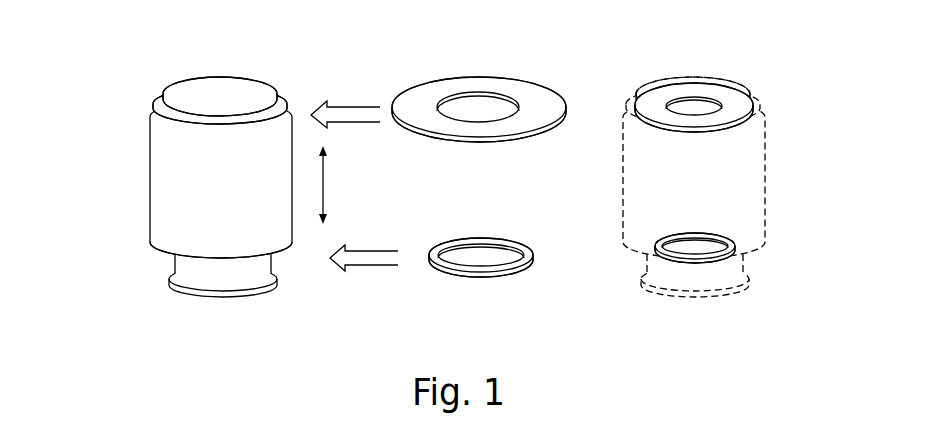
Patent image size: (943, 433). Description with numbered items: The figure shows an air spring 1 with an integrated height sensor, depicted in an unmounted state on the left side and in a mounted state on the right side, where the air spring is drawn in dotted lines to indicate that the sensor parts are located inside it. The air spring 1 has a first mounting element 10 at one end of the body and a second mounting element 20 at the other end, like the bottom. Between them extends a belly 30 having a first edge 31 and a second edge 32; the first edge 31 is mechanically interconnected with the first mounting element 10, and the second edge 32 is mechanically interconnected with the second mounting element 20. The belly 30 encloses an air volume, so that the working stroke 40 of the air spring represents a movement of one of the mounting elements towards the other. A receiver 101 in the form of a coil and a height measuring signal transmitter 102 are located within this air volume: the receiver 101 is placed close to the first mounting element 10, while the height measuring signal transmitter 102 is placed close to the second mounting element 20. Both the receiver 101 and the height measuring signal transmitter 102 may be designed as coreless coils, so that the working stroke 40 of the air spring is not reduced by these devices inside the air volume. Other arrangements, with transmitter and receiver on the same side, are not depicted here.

The air spring 1 is at (121, 134).
The first mounting element 10 is at (249, 98).
The second mounting element 20 is at (241, 293).
The belly 30 is at (462, 176).
The first edge 31 is at (156, 102).
The second edge 32 is at (159, 255).
The working stroke 40 is at (324, 183).
The receiver 101 is at (533, 98).
The height measuring signal transmitter 102 is at (495, 273).